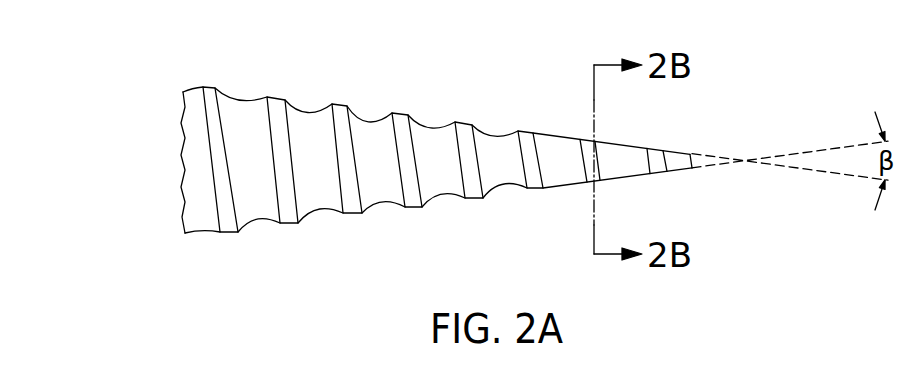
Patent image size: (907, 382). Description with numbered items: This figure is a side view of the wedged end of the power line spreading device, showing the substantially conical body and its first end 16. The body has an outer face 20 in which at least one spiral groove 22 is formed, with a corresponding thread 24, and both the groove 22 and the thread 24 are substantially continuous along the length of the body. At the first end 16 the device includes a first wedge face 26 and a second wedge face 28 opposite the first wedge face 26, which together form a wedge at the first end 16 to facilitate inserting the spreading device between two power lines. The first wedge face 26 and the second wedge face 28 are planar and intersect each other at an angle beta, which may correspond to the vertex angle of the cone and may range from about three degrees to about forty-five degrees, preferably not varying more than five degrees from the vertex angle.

The first end 16 is at (680, 170).
The outer face 20 is at (364, 157).
The spiral groove 22 is at (310, 117).
The thread 24 is at (275, 106).
The first wedge face 26 is at (623, 162).
The second wedge face 28 is at (562, 186).